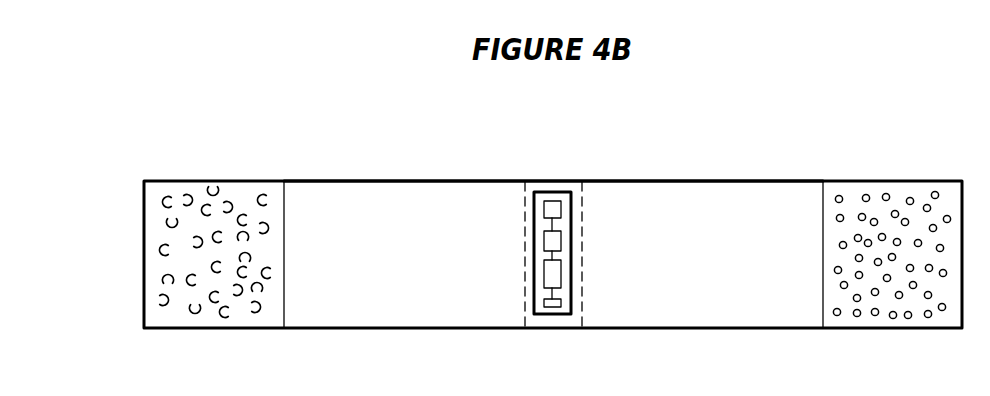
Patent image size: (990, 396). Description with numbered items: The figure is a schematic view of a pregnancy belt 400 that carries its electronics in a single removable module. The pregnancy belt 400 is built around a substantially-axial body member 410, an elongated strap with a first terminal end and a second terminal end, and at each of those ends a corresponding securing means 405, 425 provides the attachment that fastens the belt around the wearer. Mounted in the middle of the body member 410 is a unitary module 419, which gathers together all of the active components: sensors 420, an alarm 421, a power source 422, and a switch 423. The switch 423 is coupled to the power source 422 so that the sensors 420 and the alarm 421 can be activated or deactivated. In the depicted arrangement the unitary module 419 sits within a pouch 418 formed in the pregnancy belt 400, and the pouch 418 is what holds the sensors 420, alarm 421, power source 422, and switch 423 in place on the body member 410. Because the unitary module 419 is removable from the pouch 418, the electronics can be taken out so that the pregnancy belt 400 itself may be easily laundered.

The pregnancy belt 400 is at (100, 111).
The securing means 405 is at (228, 180).
The substantially-axial body member 410 is at (400, 180).
The pouch 418 is at (583, 251).
The unitary module 419 is at (555, 315).
The sensors 420 is at (543, 240).
The alarm 421 is at (543, 207).
The power source 422 is at (543, 273).
The switch 423 is at (543, 302).
The securing means 425 is at (892, 180).